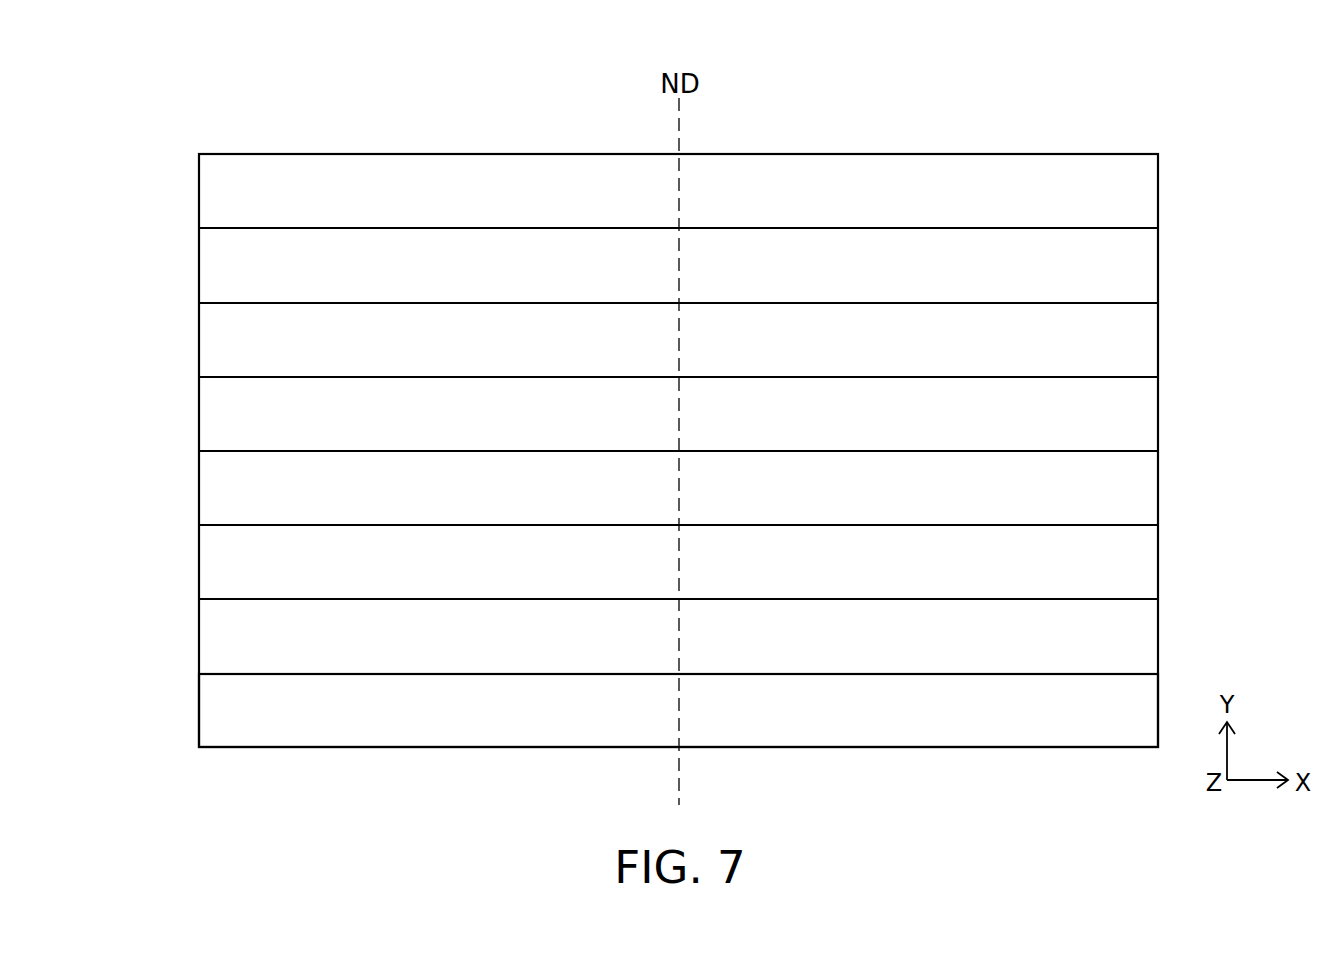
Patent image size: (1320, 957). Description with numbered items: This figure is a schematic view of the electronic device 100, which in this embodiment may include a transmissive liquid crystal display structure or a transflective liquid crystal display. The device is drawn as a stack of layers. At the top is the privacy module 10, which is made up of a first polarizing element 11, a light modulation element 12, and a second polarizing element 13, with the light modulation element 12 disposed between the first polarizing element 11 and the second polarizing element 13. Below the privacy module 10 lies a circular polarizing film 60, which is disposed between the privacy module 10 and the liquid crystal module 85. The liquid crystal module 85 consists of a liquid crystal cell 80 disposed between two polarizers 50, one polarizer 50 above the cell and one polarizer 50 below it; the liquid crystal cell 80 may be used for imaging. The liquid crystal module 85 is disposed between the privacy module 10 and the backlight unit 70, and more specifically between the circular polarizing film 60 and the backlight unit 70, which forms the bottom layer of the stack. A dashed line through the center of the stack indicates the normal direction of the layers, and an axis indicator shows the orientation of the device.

The electronic device 100 is at (155, 63).
The privacy module 10 is at (622, 276).
The first polarizing element 11 is at (221, 189).
The light modulation element 12 is at (221, 263).
The second polarizing element 13 is at (650, 351).
The circular polarizing film 60 is at (221, 412).
The liquid crystal module 85 is at (622, 574).
The polarizers 50 is at (221, 487).
The liquid crystal cell 80 is at (650, 573).
The backlight unit 70 is at (221, 709).